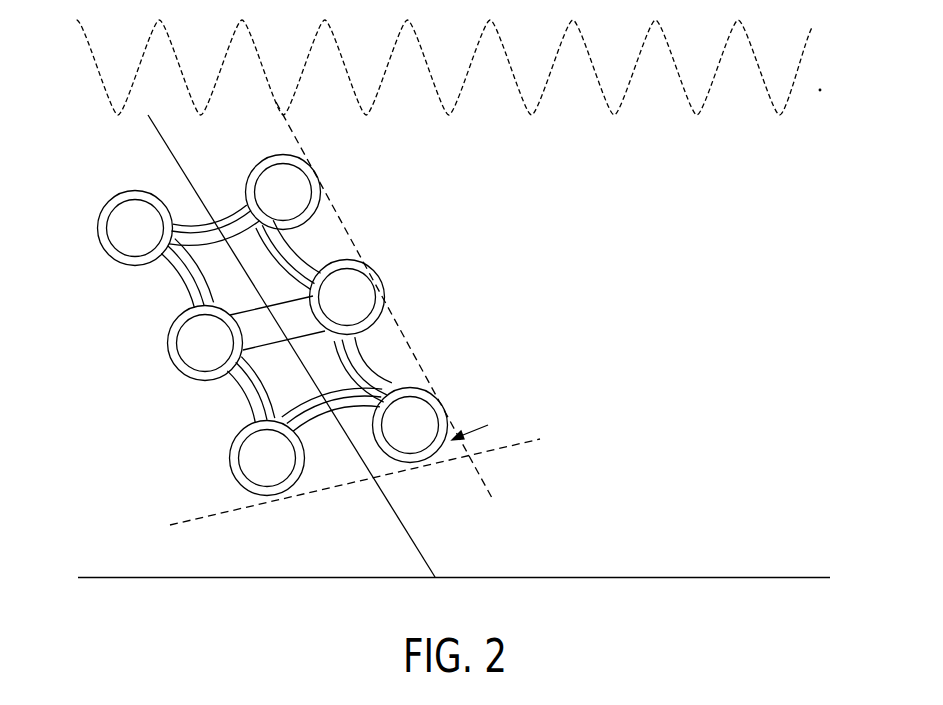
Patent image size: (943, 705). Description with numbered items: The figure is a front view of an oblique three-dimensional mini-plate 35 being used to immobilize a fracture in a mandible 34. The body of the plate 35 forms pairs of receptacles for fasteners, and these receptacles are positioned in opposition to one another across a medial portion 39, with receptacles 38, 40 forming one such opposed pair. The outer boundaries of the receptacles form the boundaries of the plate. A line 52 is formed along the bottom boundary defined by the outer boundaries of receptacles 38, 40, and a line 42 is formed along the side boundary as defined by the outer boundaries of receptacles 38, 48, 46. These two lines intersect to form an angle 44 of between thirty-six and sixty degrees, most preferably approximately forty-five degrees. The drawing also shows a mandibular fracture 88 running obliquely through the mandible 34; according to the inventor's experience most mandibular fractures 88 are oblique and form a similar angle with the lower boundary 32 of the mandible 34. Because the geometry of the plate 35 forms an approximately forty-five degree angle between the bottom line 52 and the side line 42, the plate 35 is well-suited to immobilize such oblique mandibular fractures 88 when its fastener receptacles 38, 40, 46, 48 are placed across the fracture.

The lower boundary of the mandible 32 is at (573, 578).
The mandible 34 is at (630, 505).
The oblique 3D mini-plate 35 is at (298, 254).
The receptacle 38 is at (437, 402).
The medial portion 39 is at (248, 305).
The receptacle 40 is at (257, 492).
The line along side boundary 42 is at (470, 467).
The angle 44 is at (482, 425).
The receptacle 46 is at (383, 291).
The receptacle 48 is at (313, 171).
The line along bottom boundary 52 is at (397, 307).
The mandibular fracture 88 is at (392, 512).